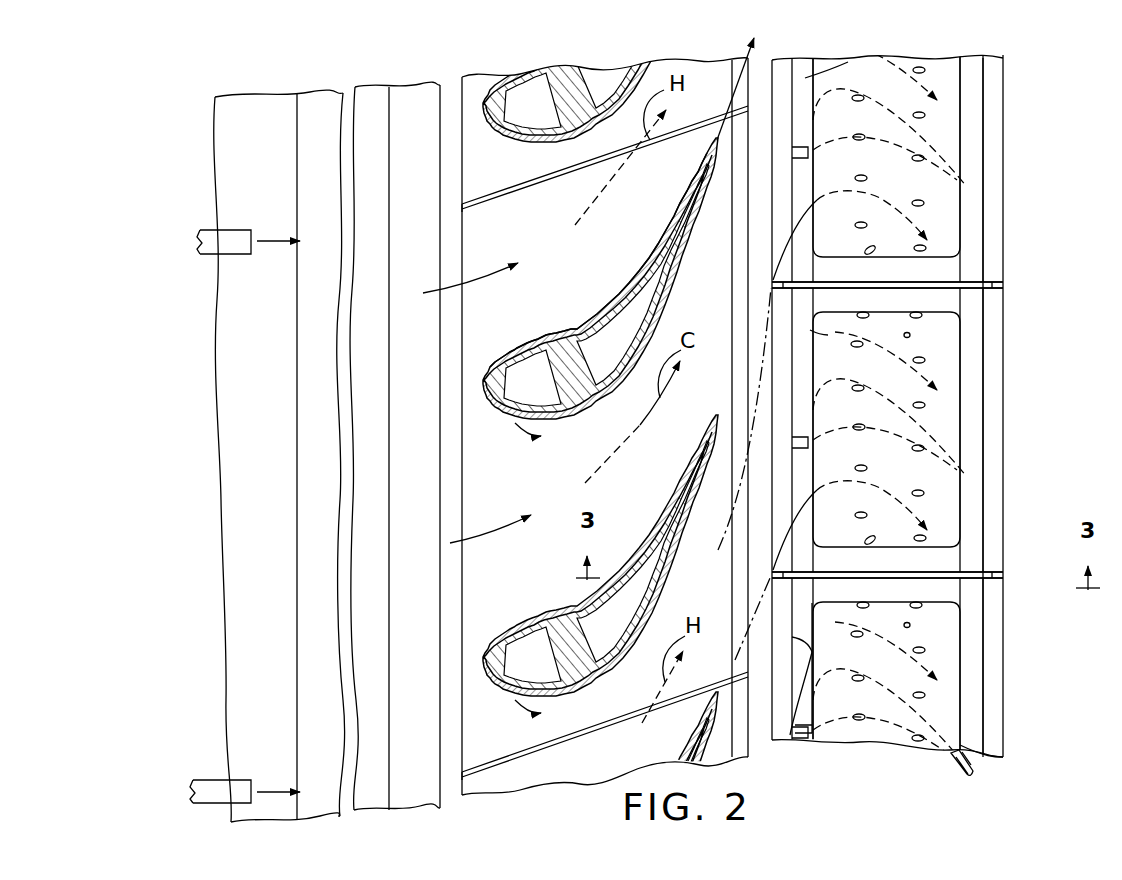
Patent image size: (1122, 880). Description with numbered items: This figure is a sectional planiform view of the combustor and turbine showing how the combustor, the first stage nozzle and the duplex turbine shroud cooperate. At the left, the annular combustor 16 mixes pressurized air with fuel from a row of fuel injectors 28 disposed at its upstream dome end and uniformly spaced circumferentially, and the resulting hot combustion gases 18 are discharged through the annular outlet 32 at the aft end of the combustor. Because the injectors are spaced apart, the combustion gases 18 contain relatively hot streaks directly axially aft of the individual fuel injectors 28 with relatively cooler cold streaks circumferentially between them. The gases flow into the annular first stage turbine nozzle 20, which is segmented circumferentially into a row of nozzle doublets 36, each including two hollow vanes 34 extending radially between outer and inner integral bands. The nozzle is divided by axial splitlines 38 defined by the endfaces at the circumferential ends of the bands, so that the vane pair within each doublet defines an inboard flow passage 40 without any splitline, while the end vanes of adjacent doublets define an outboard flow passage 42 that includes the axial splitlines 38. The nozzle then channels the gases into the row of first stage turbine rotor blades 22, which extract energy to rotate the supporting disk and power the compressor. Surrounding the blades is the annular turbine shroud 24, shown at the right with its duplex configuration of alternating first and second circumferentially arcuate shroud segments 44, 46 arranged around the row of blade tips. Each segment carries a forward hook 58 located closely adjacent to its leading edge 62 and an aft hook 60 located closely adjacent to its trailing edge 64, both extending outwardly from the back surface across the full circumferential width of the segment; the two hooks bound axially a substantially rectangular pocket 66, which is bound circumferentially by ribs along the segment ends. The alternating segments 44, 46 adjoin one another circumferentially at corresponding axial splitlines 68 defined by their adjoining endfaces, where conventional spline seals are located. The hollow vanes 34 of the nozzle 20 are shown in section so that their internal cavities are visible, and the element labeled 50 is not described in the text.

The annular combustor 16 is at (271, 422).
The hot combustion gases 18 is at (423, 292).
The first stage turbine nozzle 20 is at (466, 72).
The first stage turbine rotor blades 22 is at (950, 432).
The turbine shroud 24 is at (1008, 96).
The fuel injectors 28 is at (230, 254).
The annular outlet 32 is at (432, 517).
The hollow vanes 34 is at (482, 402).
The nozzle doublets 36 is at (456, 614).
The axial splitlines 38 is at (487, 196).
The inboard flow passage 40 is at (647, 509).
The outboard flow passage 42 is at (626, 247).
The first turbine shroud segments 44 is at (1003, 352).
The second turbine shroud segments 46 is at (1003, 188).
The airfoil suction side 50 is at (632, 287).
The forward hook 58 is at (812, 730).
The aft hook 60 is at (972, 764).
The leading edge 62 is at (772, 738).
The trailing edge 64 is at (1003, 745).
The rectangular pocket 66 is at (904, 187).
The axial splitlines 68 is at (992, 282).